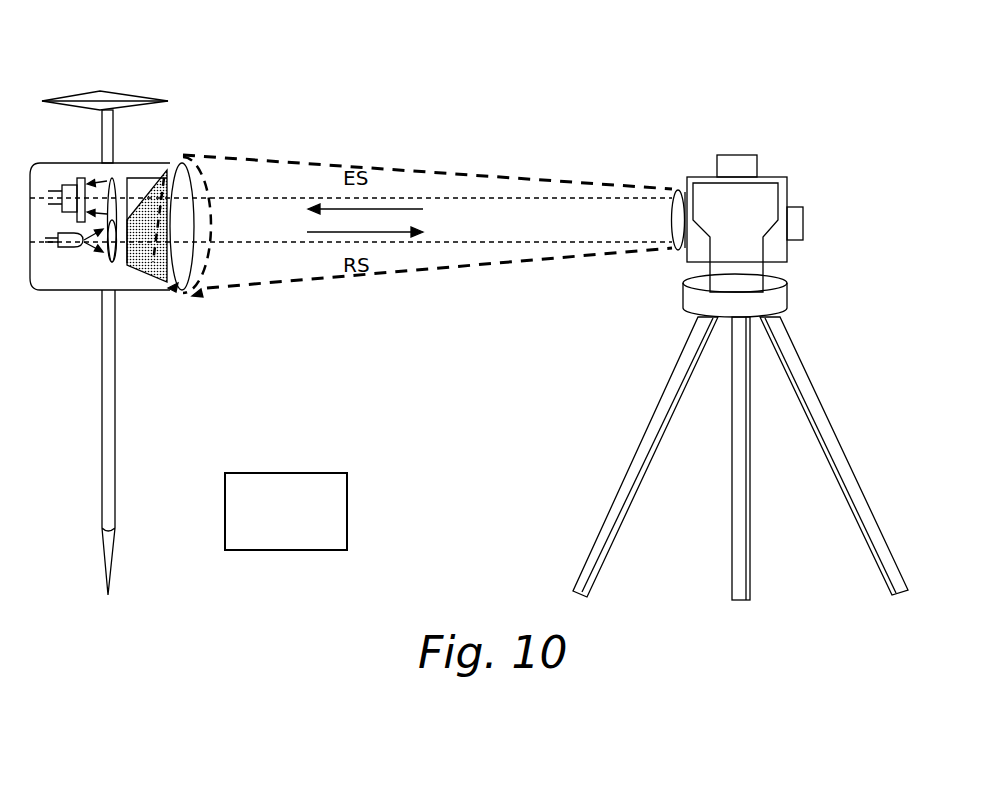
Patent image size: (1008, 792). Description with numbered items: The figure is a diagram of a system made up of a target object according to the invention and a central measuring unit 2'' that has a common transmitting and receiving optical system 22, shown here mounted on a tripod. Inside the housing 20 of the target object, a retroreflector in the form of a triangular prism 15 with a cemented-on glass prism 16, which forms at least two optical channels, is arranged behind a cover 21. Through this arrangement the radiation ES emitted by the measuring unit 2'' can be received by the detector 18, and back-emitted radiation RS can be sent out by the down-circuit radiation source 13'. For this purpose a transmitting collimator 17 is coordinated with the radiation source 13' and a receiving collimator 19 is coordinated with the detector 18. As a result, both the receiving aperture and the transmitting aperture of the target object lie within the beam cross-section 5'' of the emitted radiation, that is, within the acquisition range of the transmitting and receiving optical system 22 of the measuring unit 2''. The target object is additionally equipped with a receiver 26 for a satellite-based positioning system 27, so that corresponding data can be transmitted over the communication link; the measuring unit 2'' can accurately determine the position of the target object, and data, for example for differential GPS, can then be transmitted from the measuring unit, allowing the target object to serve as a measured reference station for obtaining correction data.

The receiver 26 is at (103, 100).
The detector 18 is at (70, 187).
The receiving collimator 19 is at (113, 187).
The glass prism 16 is at (143, 183).
The cover 21 is at (185, 190).
The triangular prism 15 is at (166, 240).
The transmitting collimator 17 is at (111, 258).
The radiation source 13' is at (155, 309).
The housing 20 is at (66, 290).
The transmitting and receiving optical system 22 is at (675, 195).
The central measuring unit 2'' is at (735, 377).
The beam cross-section 5'' is at (420, 232).
The satellite-based positioning system 27 is at (347, 510).